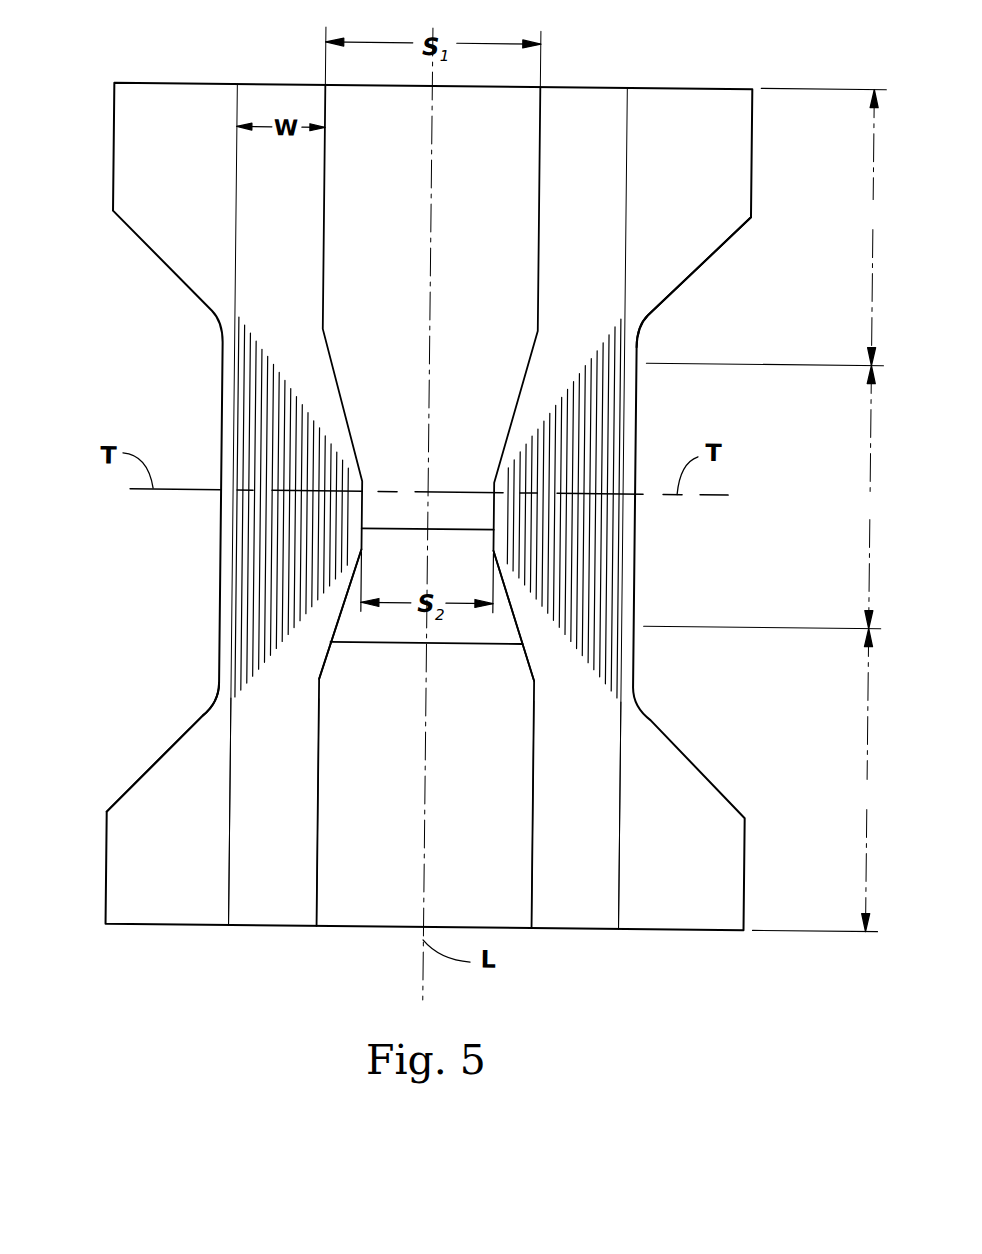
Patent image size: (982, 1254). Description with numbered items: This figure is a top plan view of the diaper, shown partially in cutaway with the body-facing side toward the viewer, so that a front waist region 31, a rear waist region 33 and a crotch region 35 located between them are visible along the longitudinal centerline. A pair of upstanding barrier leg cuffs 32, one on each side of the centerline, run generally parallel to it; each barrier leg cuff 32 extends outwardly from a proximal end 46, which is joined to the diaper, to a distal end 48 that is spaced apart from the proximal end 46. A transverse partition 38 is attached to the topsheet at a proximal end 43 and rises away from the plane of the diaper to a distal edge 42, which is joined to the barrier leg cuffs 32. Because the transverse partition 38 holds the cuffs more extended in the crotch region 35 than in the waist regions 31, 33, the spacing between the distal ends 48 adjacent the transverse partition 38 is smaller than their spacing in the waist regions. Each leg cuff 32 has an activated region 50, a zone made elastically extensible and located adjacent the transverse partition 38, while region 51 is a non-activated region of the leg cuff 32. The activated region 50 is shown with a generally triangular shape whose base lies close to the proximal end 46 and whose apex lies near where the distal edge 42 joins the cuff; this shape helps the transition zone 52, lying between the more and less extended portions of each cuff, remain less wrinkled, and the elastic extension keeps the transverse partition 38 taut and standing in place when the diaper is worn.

The front waist region 31 is at (819, 779).
The barrier leg cuff 32 is at (276, 879).
The rear waist region 33 is at (768, 226).
The crotch region 35 is at (766, 496).
The transverse partition 38 is at (458, 623).
The distal edge of the transverse partition 42 is at (457, 527).
The proximal end of the transverse partition 43 is at (396, 643).
The proximal end of the barrier leg cuff 46 is at (234, 224).
The distal end of the barrier leg cuff 48 is at (324, 293).
The activated region 50 is at (276, 587).
The non-activated region 51 is at (265, 730).
The transition zone 52 is at (564, 330).